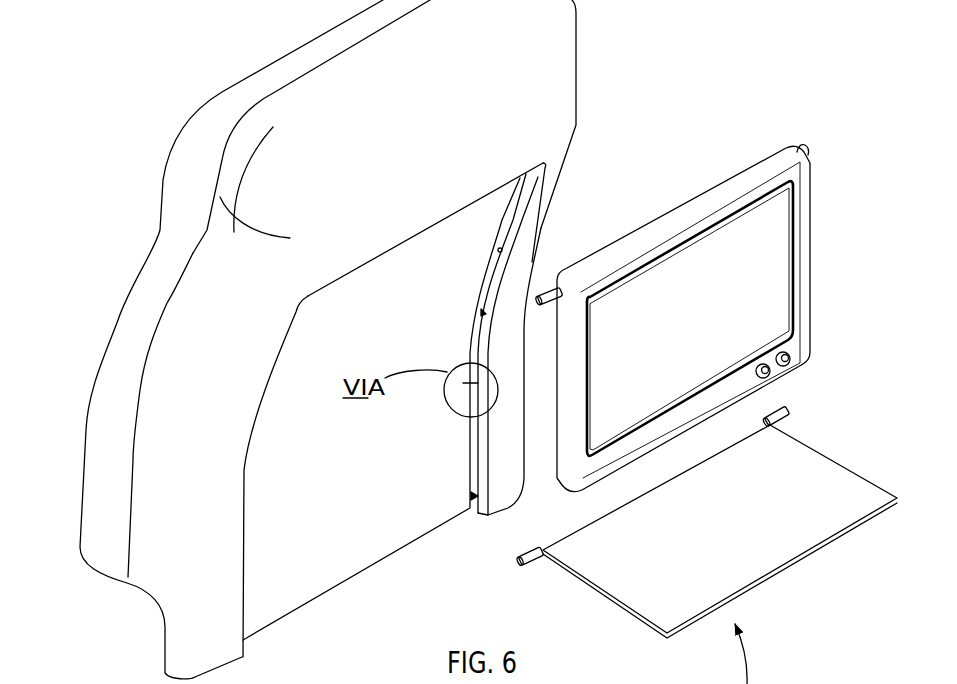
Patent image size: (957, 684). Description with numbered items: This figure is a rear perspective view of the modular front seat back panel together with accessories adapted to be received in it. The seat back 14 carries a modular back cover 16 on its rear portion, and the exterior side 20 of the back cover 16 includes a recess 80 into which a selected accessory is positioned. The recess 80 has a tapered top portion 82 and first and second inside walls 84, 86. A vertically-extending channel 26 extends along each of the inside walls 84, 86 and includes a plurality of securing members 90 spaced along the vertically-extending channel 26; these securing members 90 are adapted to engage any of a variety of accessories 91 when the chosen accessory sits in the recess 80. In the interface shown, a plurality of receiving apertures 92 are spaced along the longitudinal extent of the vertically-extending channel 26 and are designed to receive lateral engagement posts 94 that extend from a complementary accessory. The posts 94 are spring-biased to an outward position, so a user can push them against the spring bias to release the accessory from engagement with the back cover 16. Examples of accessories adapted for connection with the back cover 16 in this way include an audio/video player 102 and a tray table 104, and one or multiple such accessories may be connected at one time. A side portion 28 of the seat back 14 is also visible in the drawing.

The seat back 14 is at (167, 168).
The modular back cover 16 is at (580, 88).
The exterior side 20 is at (258, 128).
The vertically-extending channel 26 is at (477, 343).
The side bolster 28 is at (160, 365).
The recess 80 is at (392, 410).
The tapered top portion 82 is at (383, 253).
The first inside wall 84 is at (242, 540).
The second inside wall 86 is at (470, 510).
The securing members 90 is at (554, 236).
The accessories 91 is at (741, 156).
The receiving apertures 92 is at (481, 312).
The lateral engagement posts 94 is at (809, 147).
The audio/video player 102 is at (802, 345).
The tray table 104 is at (830, 473).